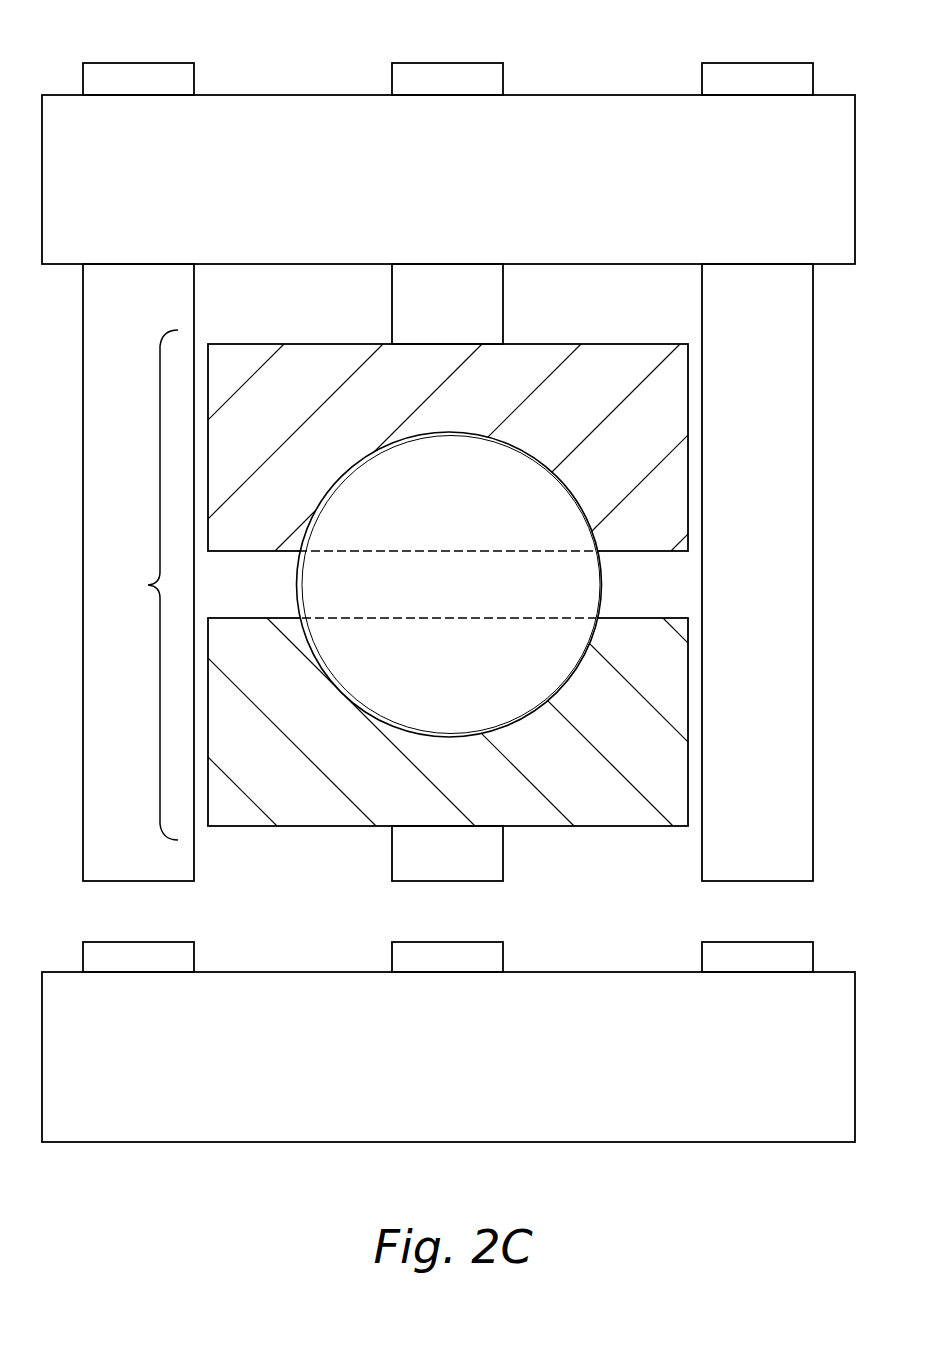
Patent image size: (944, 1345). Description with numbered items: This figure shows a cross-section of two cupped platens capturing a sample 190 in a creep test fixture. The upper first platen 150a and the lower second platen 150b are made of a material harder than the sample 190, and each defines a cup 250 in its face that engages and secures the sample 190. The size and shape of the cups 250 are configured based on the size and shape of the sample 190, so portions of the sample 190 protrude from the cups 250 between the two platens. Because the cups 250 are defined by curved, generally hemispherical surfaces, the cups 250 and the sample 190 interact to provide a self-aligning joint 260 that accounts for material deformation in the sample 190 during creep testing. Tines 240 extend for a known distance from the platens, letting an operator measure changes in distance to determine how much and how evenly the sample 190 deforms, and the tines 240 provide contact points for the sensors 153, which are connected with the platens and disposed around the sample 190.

The sensors 153 is at (132, 63).
The tines 240 is at (134, 965).
The first platen 150a is at (688, 448).
The second platen 150b is at (688, 712).
The sample 190 is at (449, 447).
The cups 250 is at (301, 540).
The self-aligning joint 260 is at (134, 585).